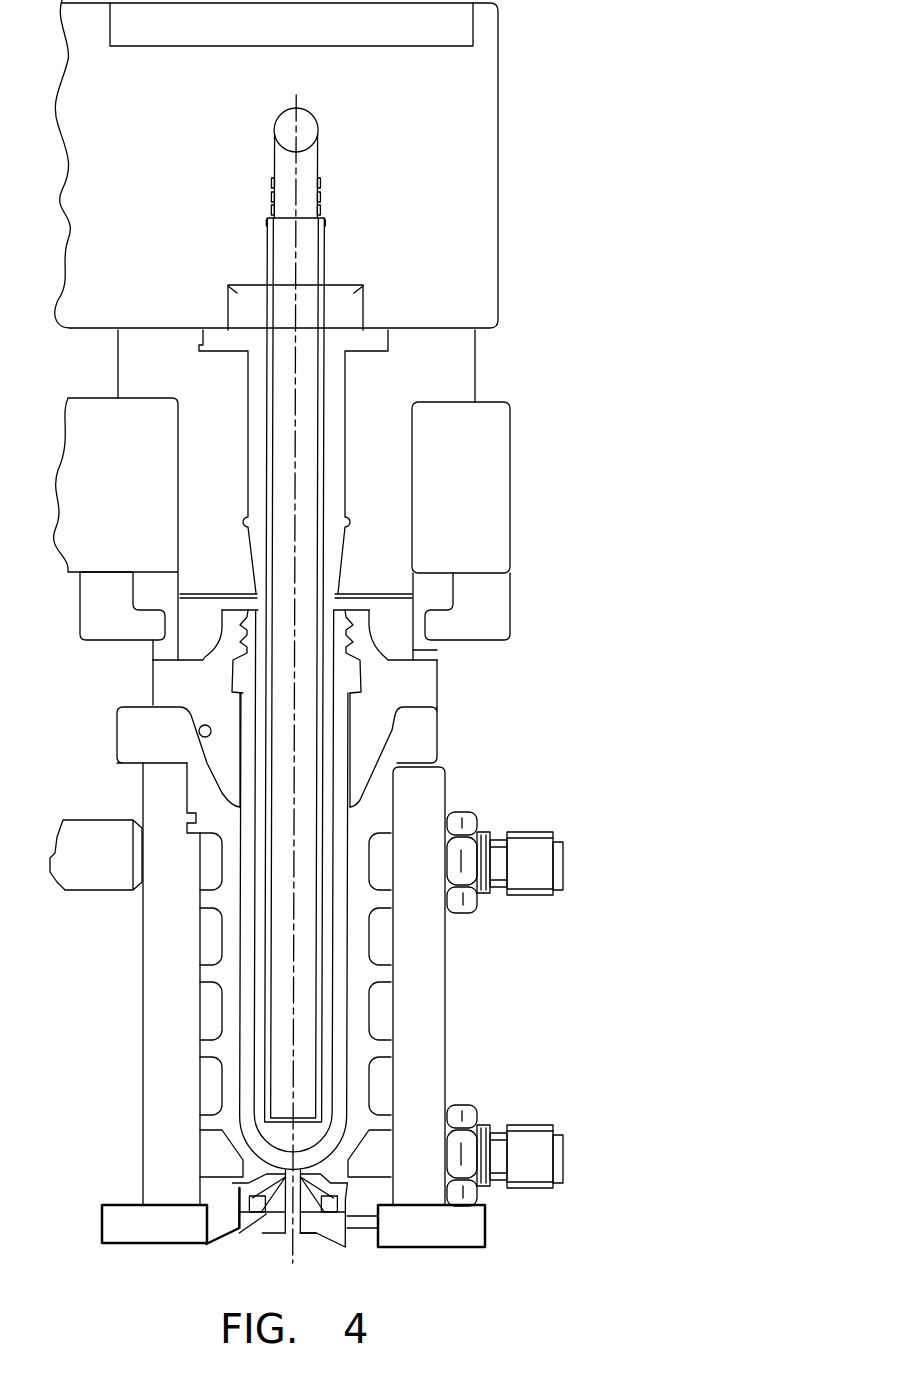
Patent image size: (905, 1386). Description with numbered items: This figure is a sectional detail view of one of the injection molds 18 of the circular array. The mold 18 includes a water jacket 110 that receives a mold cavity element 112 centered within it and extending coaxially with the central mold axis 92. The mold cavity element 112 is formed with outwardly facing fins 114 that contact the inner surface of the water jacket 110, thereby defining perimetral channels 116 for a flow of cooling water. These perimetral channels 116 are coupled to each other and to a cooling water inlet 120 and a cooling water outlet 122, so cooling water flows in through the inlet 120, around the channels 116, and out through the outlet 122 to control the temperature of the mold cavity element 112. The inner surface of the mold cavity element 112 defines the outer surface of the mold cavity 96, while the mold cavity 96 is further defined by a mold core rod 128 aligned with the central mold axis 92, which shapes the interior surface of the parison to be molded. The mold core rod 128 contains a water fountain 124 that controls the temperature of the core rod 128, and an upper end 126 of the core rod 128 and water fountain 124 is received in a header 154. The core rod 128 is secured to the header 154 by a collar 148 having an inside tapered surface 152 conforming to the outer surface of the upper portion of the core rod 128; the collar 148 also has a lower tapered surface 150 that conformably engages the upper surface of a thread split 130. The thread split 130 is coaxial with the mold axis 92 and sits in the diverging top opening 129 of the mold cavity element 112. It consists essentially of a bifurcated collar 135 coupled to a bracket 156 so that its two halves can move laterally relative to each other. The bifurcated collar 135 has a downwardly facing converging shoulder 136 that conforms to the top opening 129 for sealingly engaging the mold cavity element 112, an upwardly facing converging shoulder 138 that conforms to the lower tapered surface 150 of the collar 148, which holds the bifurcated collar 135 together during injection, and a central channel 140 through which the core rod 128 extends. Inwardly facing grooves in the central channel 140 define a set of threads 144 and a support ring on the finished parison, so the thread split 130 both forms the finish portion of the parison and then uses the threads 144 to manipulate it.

The mold 18 is at (590, 703).
The central mold axis 92 is at (300, 381).
The mold cavity 96 is at (250, 1108).
The water jacket 110 is at (158, 1065).
The mold cavity element 112 is at (358, 1043).
The outwardly facing fins 114 is at (382, 975).
The perimetral channels 116 is at (207, 940).
The cooling water inlet 120 is at (510, 897).
The cooling water outlet 122 is at (520, 1127).
The water fountain 124 is at (270, 925).
The upper end 126 is at (343, 318).
The mold core rod 128 is at (253, 513).
The diverging top opening 129 is at (423, 737).
The thread split 130 is at (427, 692).
The bifurcated collar 135 is at (157, 685).
The downwardly facing converging shoulder 136 is at (207, 740).
The upwardly facing converging shoulder 138 is at (222, 627).
The central channel 140 is at (340, 768).
The threads 144 is at (340, 617).
The collar 148 is at (188, 456).
The lower tapered surface 150 is at (383, 632).
The inside tapered surface 152 is at (337, 530).
The header 154 is at (468, 148).
The bracket 156 is at (102, 627).